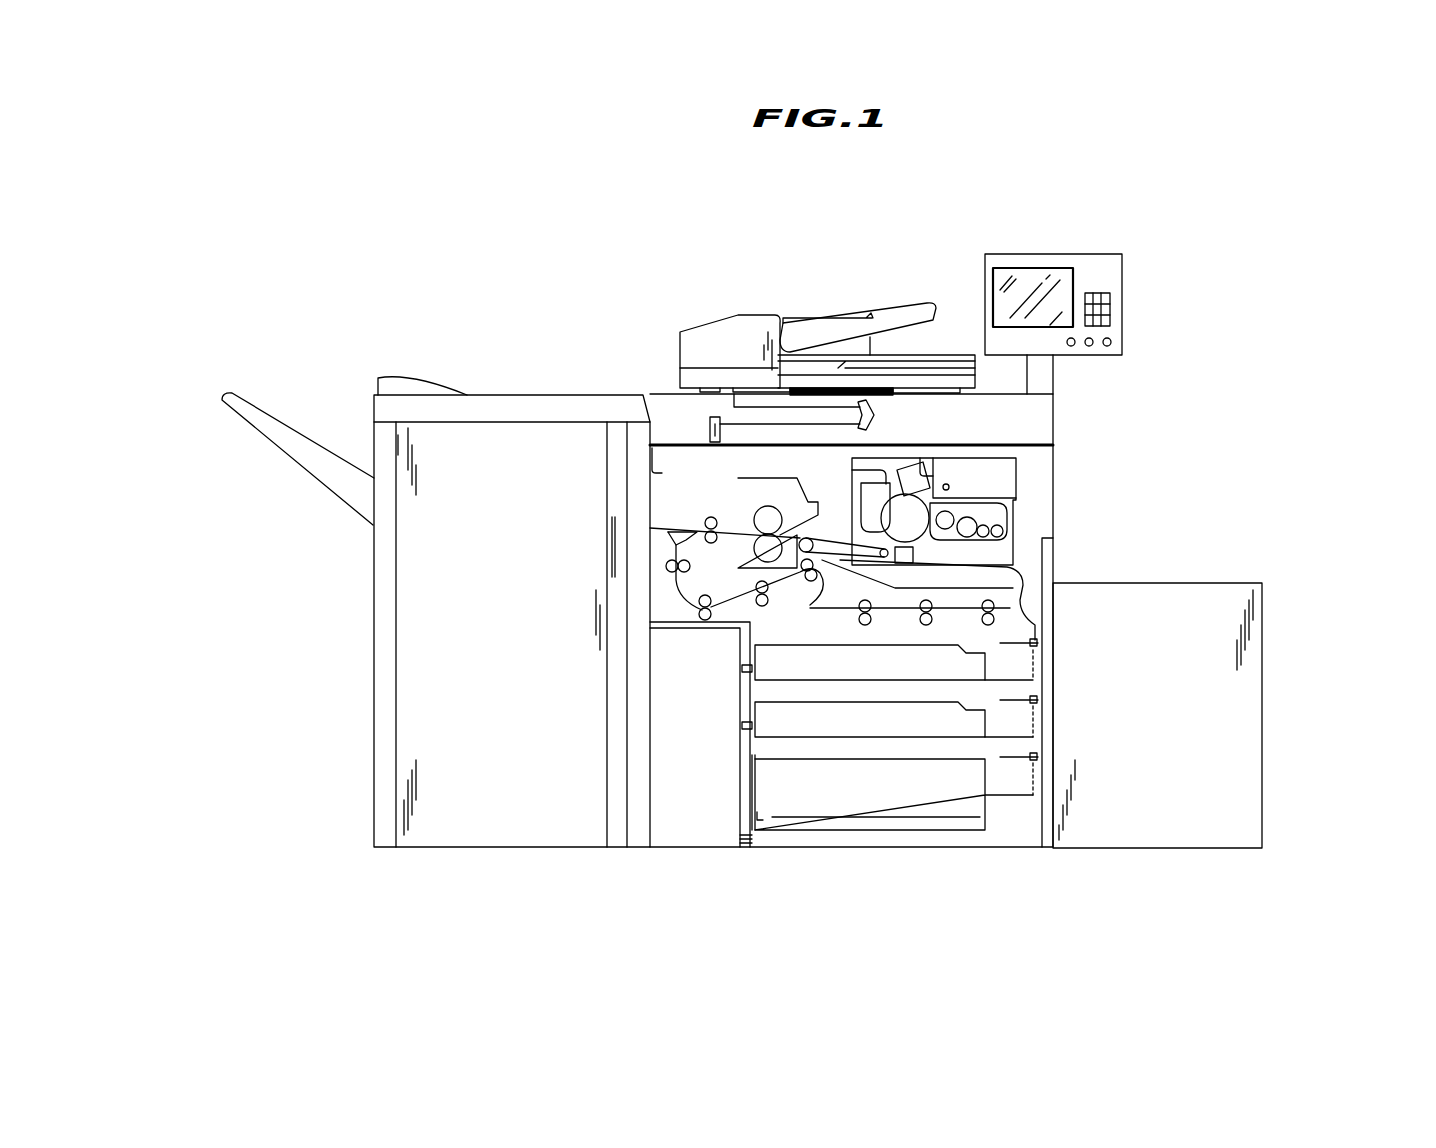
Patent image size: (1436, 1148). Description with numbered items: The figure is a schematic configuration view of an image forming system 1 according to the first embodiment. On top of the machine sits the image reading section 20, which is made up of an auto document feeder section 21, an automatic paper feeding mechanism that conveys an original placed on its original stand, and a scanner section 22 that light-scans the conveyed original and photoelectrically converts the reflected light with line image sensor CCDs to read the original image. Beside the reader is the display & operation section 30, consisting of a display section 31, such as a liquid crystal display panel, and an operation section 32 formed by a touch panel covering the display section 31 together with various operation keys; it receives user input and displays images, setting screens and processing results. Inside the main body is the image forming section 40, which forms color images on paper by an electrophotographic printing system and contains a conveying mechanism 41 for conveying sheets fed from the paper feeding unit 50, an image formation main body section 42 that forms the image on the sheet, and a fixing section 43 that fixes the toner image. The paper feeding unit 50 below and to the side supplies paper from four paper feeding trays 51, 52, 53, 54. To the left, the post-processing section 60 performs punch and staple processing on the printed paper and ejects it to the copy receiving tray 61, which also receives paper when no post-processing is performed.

The image forming system 1 is at (1250, 215).
The image reading section 20 is at (838, 300).
The auto document feeder (ADF) section 21 is at (718, 318).
The scanner section 22 is at (1082, 410).
The display & operation section 30 is at (1090, 302).
The display section 31 is at (1031, 268).
The operation section 32 is at (1110, 342).
The image forming section 40 is at (1110, 544).
The conveying mechanism 41 is at (770, 612).
The image formation main body section 42 is at (1016, 490).
The fixing section 43 is at (738, 505).
The paper feeding unit 50 is at (890, 765).
The paper feeding tray 51 is at (742, 669).
The paper feeding tray 52 is at (742, 726).
The paper feeding tray 53 is at (752, 803).
The paper feeding tray 54 is at (1230, 700).
The post-processing section 60 is at (488, 848).
The copy receiving tray 61 is at (270, 410).